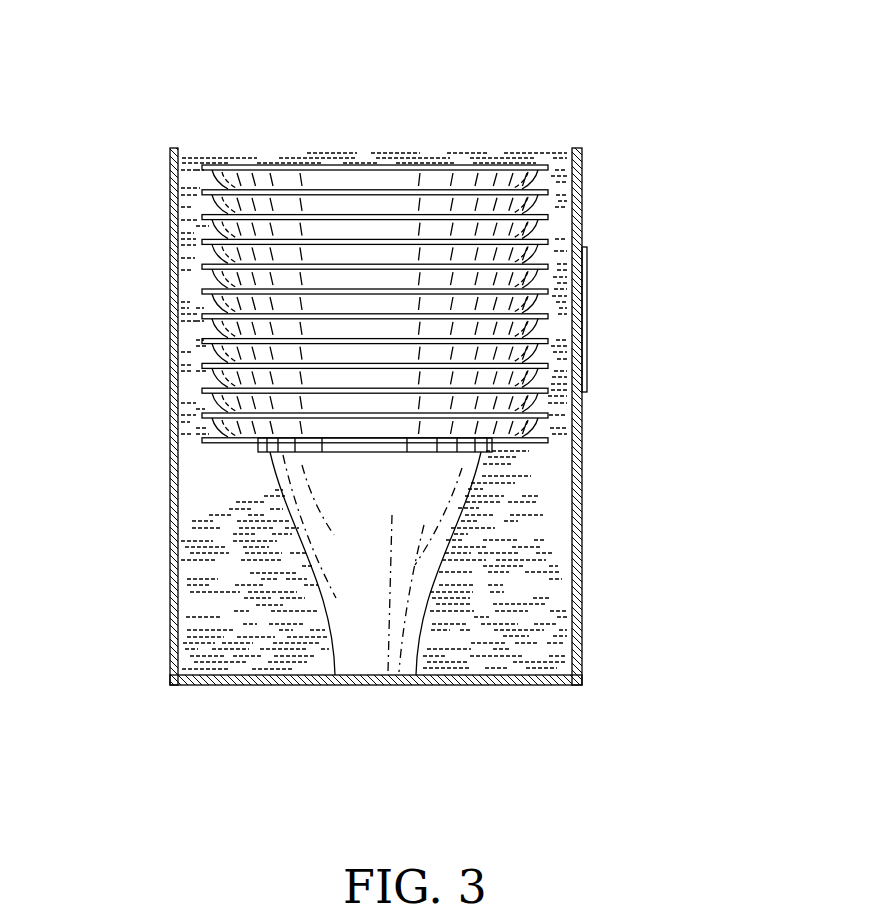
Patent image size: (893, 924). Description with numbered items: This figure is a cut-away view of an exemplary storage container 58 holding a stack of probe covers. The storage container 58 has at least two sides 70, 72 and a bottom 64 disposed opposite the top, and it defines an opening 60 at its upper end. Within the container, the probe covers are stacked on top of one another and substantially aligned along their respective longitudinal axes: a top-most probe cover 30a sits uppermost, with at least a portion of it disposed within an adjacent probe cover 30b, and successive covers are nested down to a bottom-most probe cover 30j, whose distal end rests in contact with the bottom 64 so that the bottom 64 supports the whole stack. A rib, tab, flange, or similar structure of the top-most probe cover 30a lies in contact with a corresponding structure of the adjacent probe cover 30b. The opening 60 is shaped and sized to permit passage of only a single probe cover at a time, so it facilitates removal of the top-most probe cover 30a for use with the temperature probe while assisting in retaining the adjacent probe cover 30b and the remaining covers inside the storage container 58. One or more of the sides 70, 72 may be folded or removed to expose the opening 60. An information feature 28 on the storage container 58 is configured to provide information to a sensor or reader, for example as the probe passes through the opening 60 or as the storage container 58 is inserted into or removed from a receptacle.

The opening 60 is at (198, 134).
The top-most probe cover 30a is at (465, 180).
The adjacent probe cover 30b is at (545, 195).
The bottom-most probe cover 30j is at (545, 423).
The information feature 28 is at (588, 305).
The side 72 is at (168, 508).
The side 70 is at (582, 499).
The storage container 58 is at (601, 606).
The bottom 64 is at (490, 685).